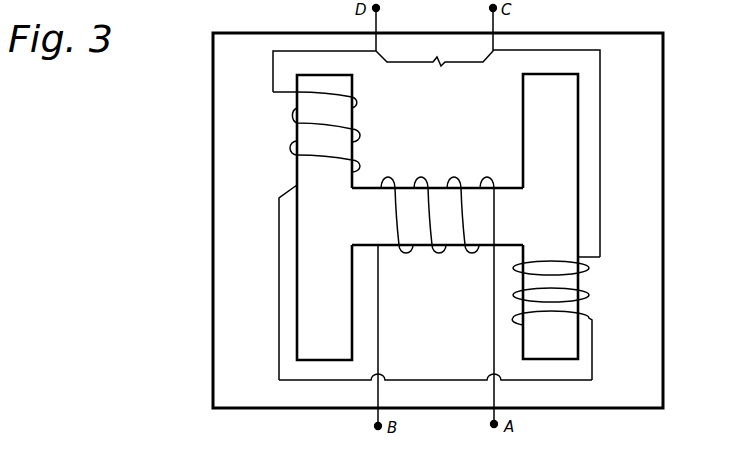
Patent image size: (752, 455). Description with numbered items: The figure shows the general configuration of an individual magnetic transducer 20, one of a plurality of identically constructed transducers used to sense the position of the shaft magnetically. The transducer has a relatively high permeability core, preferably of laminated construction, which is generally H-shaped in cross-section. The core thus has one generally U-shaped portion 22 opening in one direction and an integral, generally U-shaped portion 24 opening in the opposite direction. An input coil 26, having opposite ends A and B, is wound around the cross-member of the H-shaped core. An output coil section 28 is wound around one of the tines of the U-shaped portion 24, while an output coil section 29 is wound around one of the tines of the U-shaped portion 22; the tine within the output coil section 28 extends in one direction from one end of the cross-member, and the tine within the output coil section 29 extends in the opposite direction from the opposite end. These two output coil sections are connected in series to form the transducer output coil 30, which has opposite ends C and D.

The magnetic transducer 20 is at (663, 60).
The U-shaped portion 22 is at (523, 118).
The U-shaped portion 24 is at (327, 360).
The input coil 26 is at (437, 250).
The output coil section 28 is at (590, 295).
The output coil section 29 is at (362, 102).
The transducer output coil 30 is at (436, 132).